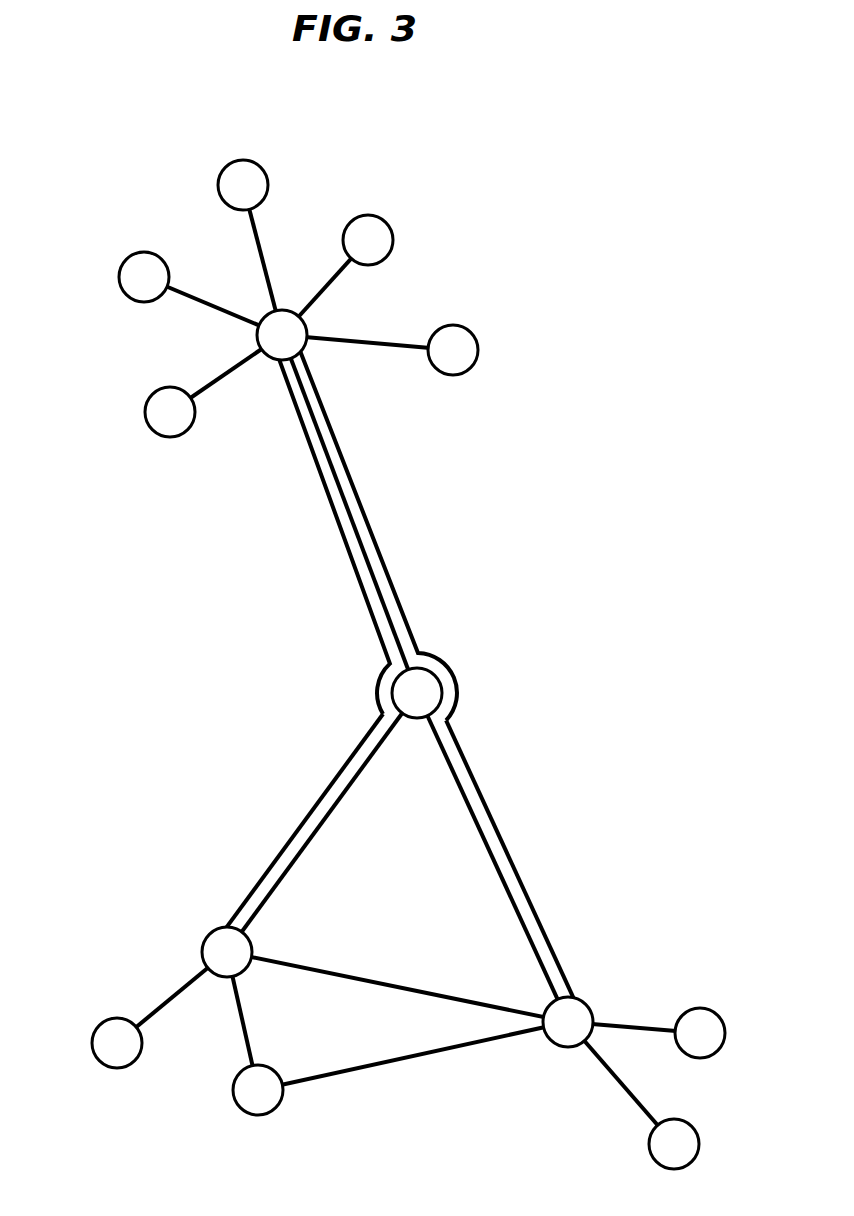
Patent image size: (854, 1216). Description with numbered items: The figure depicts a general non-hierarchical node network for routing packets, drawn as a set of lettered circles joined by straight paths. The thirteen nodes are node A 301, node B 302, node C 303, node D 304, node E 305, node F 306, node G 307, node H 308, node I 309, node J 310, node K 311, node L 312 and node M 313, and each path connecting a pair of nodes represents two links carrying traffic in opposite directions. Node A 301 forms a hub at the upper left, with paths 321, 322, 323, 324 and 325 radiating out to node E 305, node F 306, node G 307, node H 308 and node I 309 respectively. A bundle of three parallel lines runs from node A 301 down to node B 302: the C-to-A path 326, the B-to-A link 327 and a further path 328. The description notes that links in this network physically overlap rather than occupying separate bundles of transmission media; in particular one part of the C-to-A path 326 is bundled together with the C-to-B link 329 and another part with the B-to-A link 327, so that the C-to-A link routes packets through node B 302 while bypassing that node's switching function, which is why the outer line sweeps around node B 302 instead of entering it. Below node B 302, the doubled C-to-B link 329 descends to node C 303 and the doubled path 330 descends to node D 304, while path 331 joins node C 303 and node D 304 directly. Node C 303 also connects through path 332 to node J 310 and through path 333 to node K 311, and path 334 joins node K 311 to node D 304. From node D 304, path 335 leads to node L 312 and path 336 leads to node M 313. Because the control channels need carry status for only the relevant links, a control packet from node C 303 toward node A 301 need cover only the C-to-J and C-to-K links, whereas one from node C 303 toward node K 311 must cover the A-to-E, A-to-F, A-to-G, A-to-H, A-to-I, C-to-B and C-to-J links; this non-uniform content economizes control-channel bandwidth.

The node A 301 is at (311, 349).
The node B 302 is at (417, 718).
The node C 303 is at (252, 943).
The node D 304 is at (560, 1044).
The node E 305 is at (158, 438).
The node F 306 is at (123, 262).
The node G 307 is at (248, 162).
The node H 308 is at (391, 229).
The node I 309 is at (478, 338).
The node J 310 is at (98, 1066).
The node K 311 is at (245, 1112).
The node L 312 is at (722, 1013).
The node M 313 is at (699, 1130).
The path 321 is at (232, 372).
The path 322 is at (212, 313).
The path 323 is at (262, 263).
The path 324 is at (325, 287).
The path 325 is at (370, 340).
The C-to-A path 326 is at (305, 443).
The B-to-A link 327 is at (332, 463).
The path 328 is at (370, 525).
The C-to-B link 329 is at (315, 838).
The path 330 is at (503, 885).
The path 331 is at (370, 980).
The path 332 is at (175, 990).
The path 333 is at (250, 1027).
The path 334 is at (400, 1072).
The path 335 is at (637, 1022).
The path 336 is at (635, 1102).